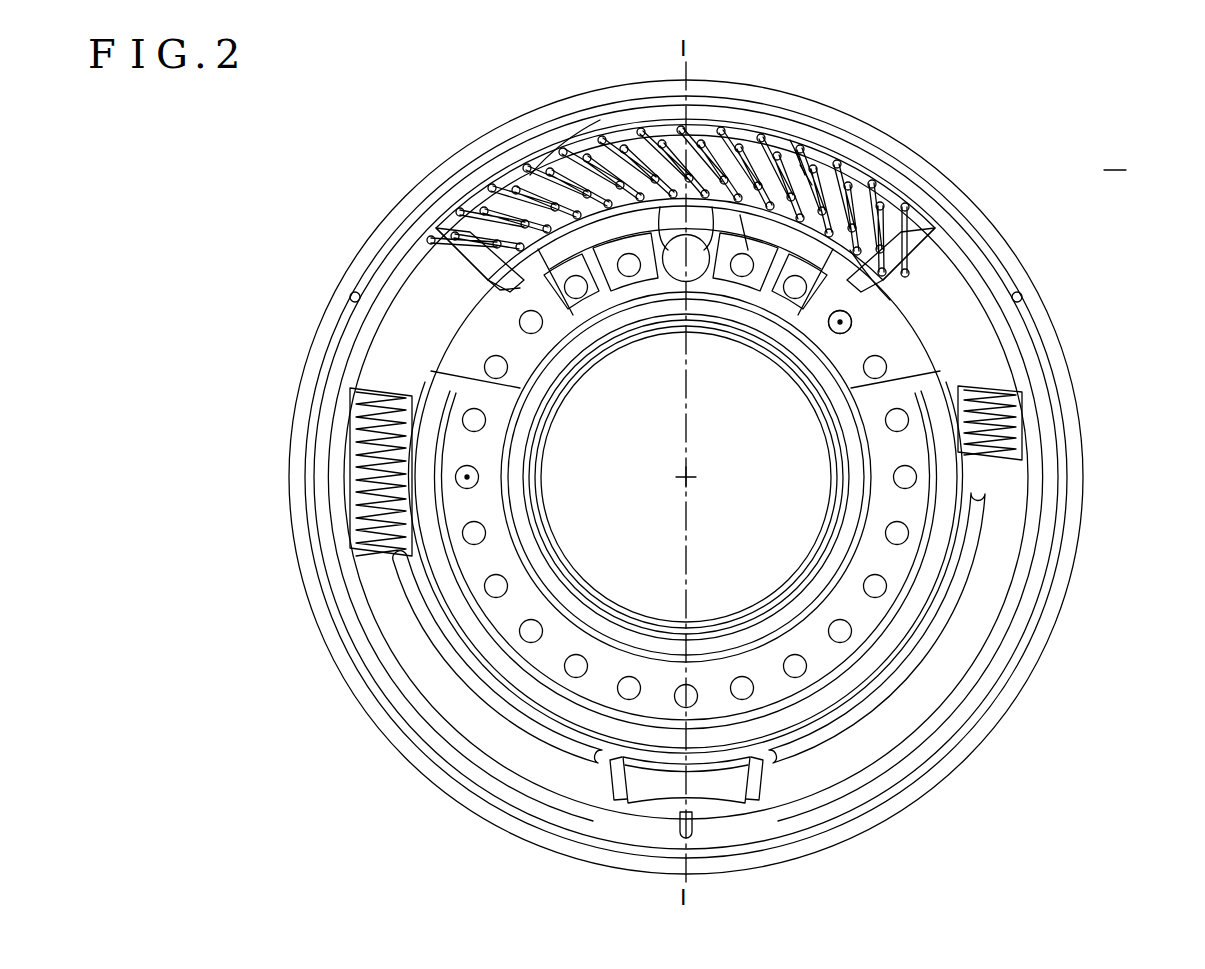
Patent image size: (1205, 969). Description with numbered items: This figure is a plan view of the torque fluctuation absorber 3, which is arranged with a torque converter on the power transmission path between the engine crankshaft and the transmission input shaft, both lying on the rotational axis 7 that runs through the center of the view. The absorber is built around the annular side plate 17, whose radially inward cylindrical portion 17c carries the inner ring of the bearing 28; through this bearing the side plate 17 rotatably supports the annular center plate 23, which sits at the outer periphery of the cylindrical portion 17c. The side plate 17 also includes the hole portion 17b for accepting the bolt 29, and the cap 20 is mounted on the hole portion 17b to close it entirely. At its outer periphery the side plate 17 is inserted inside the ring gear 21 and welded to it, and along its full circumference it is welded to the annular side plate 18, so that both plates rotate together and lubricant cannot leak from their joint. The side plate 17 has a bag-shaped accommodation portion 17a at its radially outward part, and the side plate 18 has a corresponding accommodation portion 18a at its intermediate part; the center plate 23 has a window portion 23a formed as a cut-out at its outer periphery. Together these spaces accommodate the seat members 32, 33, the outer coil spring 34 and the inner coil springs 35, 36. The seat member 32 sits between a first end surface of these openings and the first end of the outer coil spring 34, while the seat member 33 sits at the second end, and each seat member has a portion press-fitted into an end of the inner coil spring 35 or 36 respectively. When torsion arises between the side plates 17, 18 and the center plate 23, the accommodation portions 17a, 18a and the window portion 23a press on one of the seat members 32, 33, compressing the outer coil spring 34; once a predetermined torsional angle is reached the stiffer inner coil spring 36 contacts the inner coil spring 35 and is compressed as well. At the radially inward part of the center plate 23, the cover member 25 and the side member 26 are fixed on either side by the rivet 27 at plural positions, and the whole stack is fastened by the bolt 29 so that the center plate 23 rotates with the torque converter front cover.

The torque fluctuation absorber 3 is at (1115, 158).
The rotational axis 7 is at (690, 477).
The side plate 17 is at (600, 200).
The accommodation portion 17a is at (800, 170).
The hole portion 17b is at (755, 250).
The cylindrical portion 17c is at (590, 595).
The side plate 18 is at (1040, 515).
The accommodation portion 18a is at (1000, 550).
The cap 20 is at (668, 248).
The ring gear 21 is at (358, 262).
The center plate 23 is at (915, 360).
The window portion 23a is at (515, 275).
The cover member 25 is at (893, 572).
The side member 26 is at (806, 170).
The rivet 27 is at (843, 321).
The bearing 28 is at (548, 590).
The bolt 29 is at (464, 477).
The seat member 32 is at (450, 240).
The seat member 33 is at (905, 272).
The outer coil spring 34 is at (795, 150).
The inner coil spring 35 is at (545, 180).
The inner coil spring 36 is at (880, 282).